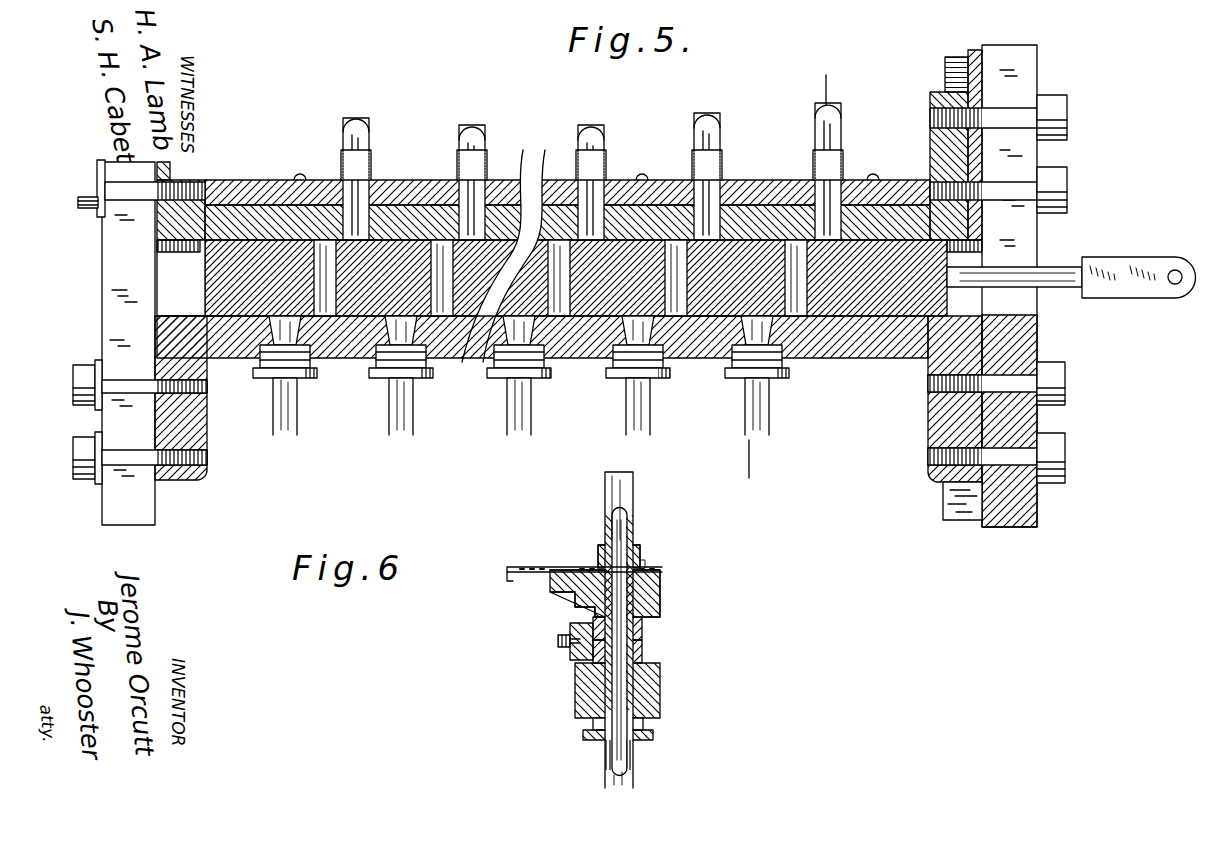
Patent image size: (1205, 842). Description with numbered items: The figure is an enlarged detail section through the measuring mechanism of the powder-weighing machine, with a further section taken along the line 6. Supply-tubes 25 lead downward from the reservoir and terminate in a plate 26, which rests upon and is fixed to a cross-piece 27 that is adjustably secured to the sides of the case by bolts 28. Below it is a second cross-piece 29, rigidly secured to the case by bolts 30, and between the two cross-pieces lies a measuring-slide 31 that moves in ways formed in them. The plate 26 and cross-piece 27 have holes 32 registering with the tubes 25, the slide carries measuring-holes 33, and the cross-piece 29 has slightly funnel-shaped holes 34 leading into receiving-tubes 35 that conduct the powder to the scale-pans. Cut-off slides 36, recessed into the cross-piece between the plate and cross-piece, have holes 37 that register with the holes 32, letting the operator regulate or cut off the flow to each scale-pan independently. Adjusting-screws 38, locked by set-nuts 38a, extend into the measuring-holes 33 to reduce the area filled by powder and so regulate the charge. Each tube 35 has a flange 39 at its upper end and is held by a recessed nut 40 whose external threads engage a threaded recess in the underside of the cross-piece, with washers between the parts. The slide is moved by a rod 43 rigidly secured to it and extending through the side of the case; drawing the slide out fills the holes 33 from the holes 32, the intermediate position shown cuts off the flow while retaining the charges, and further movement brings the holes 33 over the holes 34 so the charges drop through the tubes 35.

In FIG. 5, the section line 6 is at (788, 273).
In FIG. 5, the supply-tubes 25 is at (600, 142).
In FIG. 6, the supply-tubes 25 is at (634, 497).
In FIG. 5, the plate 26 is at (776, 195).
In FIG. 6, the plate 26 is at (640, 562).
In FIG. 5, the cross-piece 27 is at (238, 196).
In FIG. 6, the cross-piece 27 is at (661, 590).
In FIG. 5, the bolts 28 is at (1067, 185).
In FIG. 5, the cross-piece 29 is at (886, 357).
In FIG. 6, the cross-piece 29 is at (658, 692).
In FIG. 5, the bolts 30 is at (85, 440).
In FIG. 5, the measuring-slide 31 is at (208, 272).
In FIG. 6, the measuring-slide 31 is at (644, 652).
In FIG. 5, the holes 32 is at (520, 196).
In FIG. 6, the holes 32 is at (575, 600).
In FIG. 5, the measuring-holes 33 is at (330, 325).
In FIG. 6, the measuring-holes 33 is at (642, 628).
In FIG. 5, the holes 34 is at (662, 370).
In FIG. 6, the holes 34 is at (576, 700).
In FIG. 5, the receiving-tubes 35 is at (408, 400).
In FIG. 6, the receiving-tubes 35 is at (634, 775).
In FIG. 5, the cut-off slides 36 is at (374, 182).
In FIG. 6, the cut-off slides 36 is at (590, 562).
In FIG. 5, the holes 37 is at (486, 172).
In FIG. 6, the holes 37 is at (632, 580).
In FIG. 6, the adjusting-screws 38 is at (560, 645).
In FIG. 6, the set-nuts 38a is at (572, 630).
In FIG. 6, the flange 39 is at (592, 724).
In FIG. 5, the recessed nuts 40 is at (256, 376).
In FIG. 6, the recessed nuts 40 is at (654, 732).
In FIG. 5, the rod 43 is at (1065, 300).